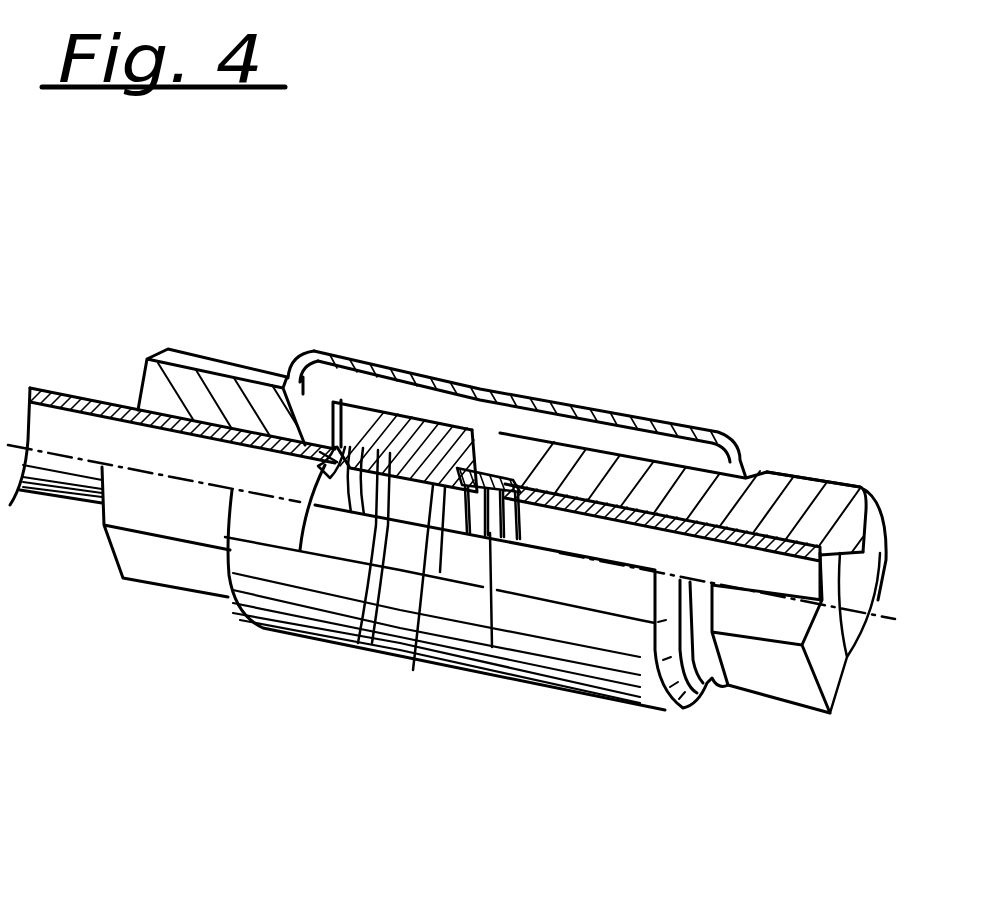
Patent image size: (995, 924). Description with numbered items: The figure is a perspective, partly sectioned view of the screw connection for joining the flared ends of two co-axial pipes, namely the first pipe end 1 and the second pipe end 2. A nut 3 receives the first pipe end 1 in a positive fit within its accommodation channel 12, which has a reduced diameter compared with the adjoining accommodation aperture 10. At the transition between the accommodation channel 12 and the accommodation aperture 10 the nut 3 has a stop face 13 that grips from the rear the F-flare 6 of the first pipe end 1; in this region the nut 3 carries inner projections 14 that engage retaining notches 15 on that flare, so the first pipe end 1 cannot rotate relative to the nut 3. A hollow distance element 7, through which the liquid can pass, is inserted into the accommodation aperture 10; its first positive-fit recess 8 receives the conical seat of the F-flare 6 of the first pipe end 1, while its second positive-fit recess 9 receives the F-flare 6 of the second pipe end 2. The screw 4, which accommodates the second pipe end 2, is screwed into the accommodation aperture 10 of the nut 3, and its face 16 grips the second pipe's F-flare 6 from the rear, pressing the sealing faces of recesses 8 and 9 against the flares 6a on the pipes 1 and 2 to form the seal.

The first pipe end 1 is at (63, 350).
The second pipe end 2 is at (763, 508).
The nut 3 is at (302, 370).
The screw 4 is at (766, 507).
The F-flare 6 is at (355, 412).
The flares 6a is at (290, 560).
The distance element 7 is at (428, 447).
The first positive-fit recess 8 is at (358, 643).
The second positive-fit recess 9 is at (413, 670).
The accommodation aperture 10 is at (457, 392).
The accommodation channel 12 is at (148, 356).
The stop face 13 is at (247, 365).
The projections 14 is at (343, 392).
The retaining notches 15 is at (312, 452).
The face 16 is at (565, 400).